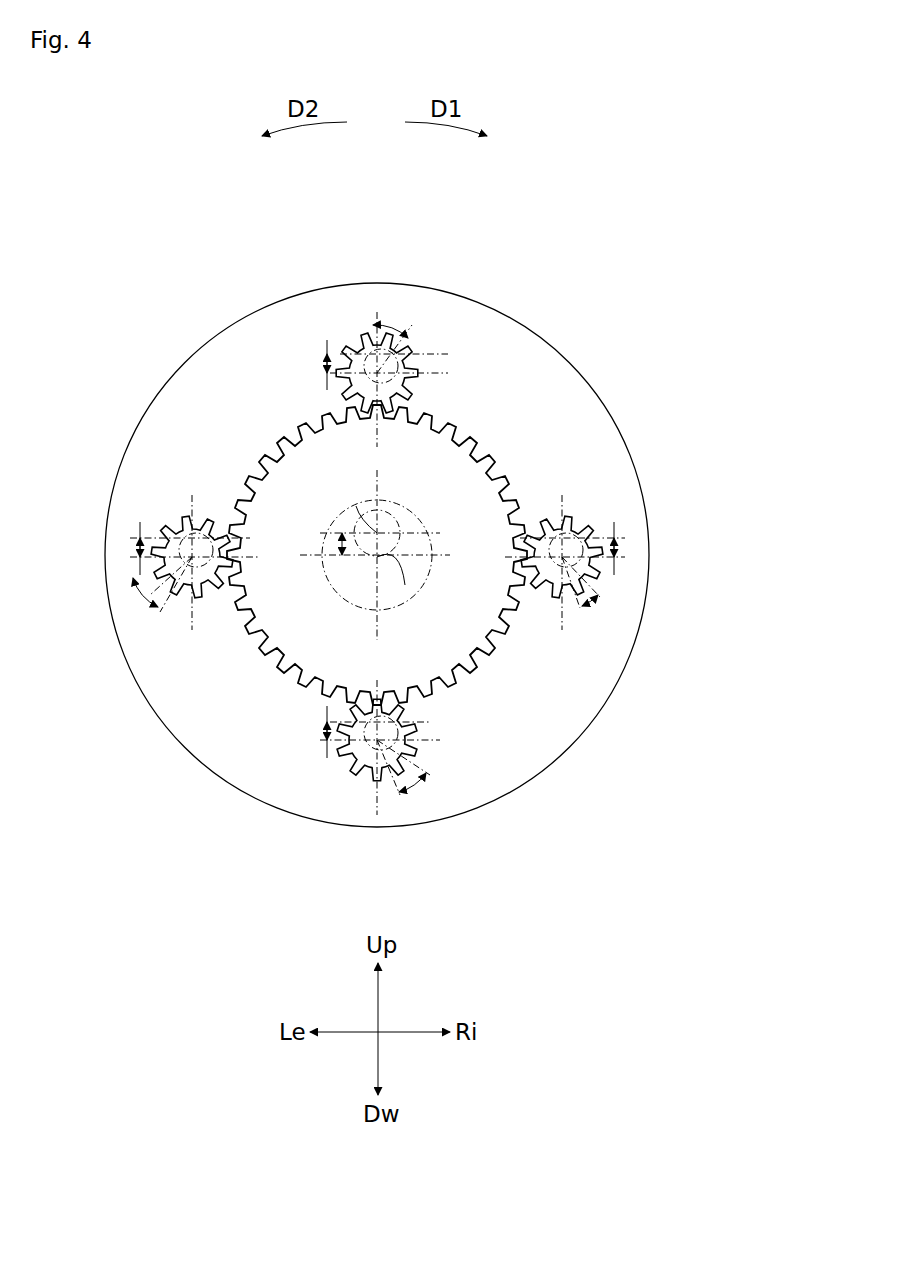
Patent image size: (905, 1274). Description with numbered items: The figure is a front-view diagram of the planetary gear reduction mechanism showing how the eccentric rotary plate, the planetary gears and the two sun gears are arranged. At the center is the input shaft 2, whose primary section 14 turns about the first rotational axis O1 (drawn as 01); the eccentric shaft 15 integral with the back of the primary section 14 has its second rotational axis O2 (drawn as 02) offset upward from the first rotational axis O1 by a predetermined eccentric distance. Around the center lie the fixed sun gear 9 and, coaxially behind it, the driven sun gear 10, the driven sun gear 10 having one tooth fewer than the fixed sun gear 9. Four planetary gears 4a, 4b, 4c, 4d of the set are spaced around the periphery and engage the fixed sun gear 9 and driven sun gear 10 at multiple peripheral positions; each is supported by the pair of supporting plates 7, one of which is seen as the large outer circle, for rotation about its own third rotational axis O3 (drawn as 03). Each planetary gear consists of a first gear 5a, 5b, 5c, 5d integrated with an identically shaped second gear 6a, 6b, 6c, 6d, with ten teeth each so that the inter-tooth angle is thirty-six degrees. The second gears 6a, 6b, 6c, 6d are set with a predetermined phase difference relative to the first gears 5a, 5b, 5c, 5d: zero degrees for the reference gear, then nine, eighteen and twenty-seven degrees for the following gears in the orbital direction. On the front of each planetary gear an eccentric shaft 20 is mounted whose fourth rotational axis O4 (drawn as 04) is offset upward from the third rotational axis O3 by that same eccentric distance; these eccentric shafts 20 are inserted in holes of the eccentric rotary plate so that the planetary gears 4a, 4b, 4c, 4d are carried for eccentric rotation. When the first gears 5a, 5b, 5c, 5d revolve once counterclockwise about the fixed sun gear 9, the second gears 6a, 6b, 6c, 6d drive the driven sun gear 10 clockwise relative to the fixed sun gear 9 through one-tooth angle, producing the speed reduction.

The input shaft 2 is at (382, 533).
The primary section 14 is at (427, 530).
The eccentric shaft 15 is at (380, 503).
The planetary gear 4a is at (391, 353).
The planetary gear 4b is at (599, 541).
The planetary gear 4c is at (361, 771).
The planetary gear 4d is at (170, 546).
The first gear 5a is at (434, 373).
The first gear 5b is at (562, 525).
The first gear 5c is at (378, 781).
The first gear 5d is at (196, 526).
The second gear 6a is at (385, 373).
The second gear 6b is at (536, 524).
The second gear 6c is at (370, 783).
The second gear 6d is at (193, 528).
The supporting plate 7 is at (577, 741).
The fixed sun gear 9 is at (357, 572).
The driven sun gear 10 is at (300, 682).
The eccentric shaft 20 is at (350, 380).
The first rotational axis O1 is at (420, 585).
The second rotational axis O2 is at (354, 501).
The third rotational axis O3 is at (379, 598).
The fourth rotational axis O4 is at (386, 504).
The first rotational axis 01 is at (405, 585).
The second rotational axis 02 is at (356, 506).
The third rotational axis 03 is at (410, 383).
The fourth rotational axis 04 is at (350, 338).